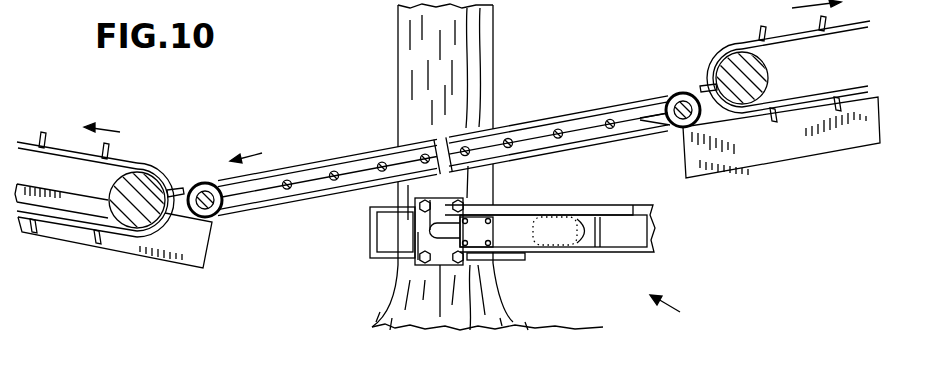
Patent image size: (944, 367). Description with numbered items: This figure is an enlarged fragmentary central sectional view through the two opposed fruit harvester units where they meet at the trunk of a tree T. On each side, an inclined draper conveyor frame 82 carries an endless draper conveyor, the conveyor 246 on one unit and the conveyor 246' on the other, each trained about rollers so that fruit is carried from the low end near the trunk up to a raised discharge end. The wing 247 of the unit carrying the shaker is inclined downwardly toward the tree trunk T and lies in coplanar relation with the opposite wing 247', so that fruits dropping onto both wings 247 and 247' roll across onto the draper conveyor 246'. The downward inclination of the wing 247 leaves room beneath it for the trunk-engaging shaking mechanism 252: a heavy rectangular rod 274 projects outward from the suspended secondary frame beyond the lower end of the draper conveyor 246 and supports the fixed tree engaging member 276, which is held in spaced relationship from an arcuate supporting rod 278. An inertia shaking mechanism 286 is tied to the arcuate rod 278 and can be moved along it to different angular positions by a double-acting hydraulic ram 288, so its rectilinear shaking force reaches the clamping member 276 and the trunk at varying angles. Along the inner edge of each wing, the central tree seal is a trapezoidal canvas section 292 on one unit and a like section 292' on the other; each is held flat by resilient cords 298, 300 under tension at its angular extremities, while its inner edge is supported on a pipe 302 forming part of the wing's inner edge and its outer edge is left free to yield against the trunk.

The tree T is at (483, 72).
The draper conveyor frame 82 is at (763, 157).
The draper conveyor 246 is at (785, 63).
The draper conveyor 246' is at (100, 207).
The wing 247 is at (558, 126).
The wing 247' is at (335, 170).
The trunk-engaging shaking mechanism 252 is at (695, 315).
The rectangular rod 274 is at (643, 238).
The fixed tree engaging member 276 is at (370, 243).
The arcuate supporting rod 278 is at (393, 241).
The inertia shaking mechanism 286 is at (563, 247).
The hydraulic ram 288 is at (590, 206).
The trapezoidal section 292 is at (650, 95).
The trapezoidal section 292' is at (230, 213).
The resilient cord 298 is at (380, 171).
The resilient cord 300 is at (633, 113).
The pipe 302 is at (672, 122).